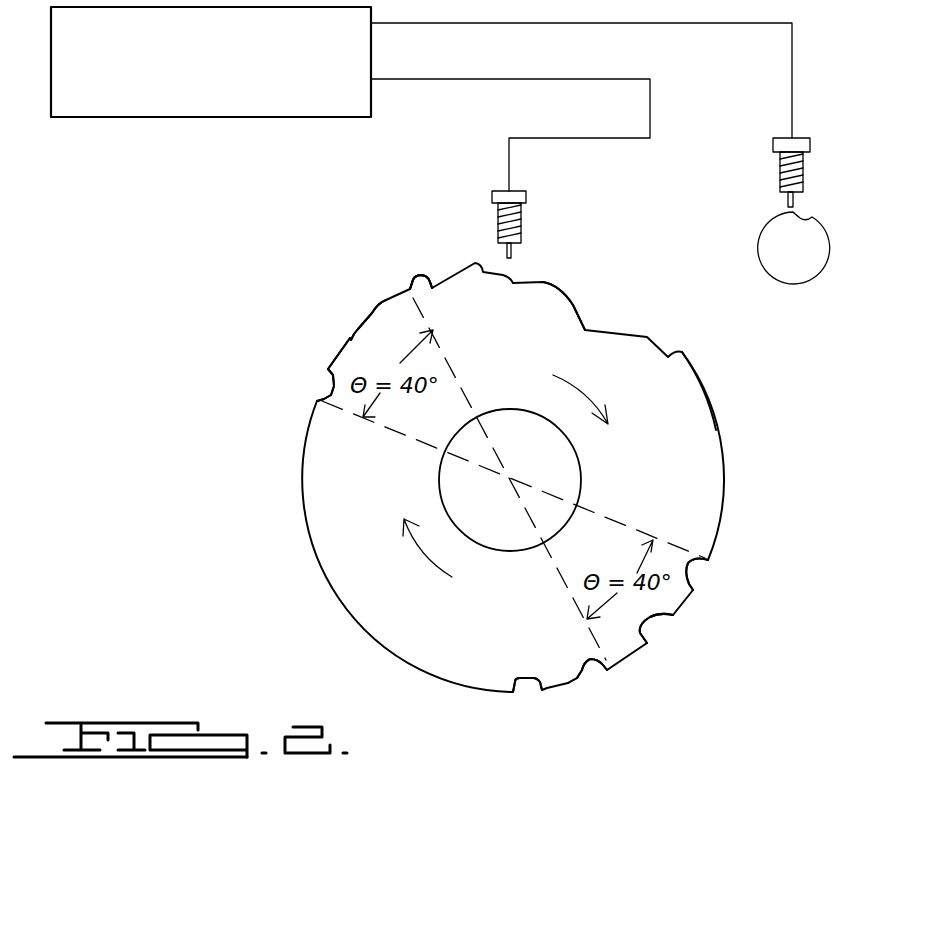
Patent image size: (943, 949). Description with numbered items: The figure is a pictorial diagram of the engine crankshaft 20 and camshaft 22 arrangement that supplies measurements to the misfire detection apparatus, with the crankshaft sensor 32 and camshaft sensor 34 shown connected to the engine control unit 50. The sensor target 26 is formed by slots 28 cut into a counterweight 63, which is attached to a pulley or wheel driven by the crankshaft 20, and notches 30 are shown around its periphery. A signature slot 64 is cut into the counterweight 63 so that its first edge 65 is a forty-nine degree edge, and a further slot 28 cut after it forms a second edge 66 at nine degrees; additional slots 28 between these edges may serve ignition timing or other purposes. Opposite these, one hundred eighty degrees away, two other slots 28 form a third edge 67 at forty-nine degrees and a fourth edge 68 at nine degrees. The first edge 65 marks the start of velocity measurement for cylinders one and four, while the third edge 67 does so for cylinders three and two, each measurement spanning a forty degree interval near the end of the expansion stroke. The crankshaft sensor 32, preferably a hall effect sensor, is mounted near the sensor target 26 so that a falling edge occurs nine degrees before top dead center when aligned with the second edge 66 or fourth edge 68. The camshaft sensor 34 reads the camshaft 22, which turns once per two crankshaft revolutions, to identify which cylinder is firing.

The engine control unit 50 is at (197, 100).
The crankshaft sensor 32 is at (513, 220).
The camshaft sensor 34 is at (798, 165).
The camshaft 22 is at (807, 273).
The sensor target 26 is at (327, 532).
The crankshaft 20 is at (502, 540).
The slots 28 is at (325, 390).
The notches 30 is at (380, 300).
The counterweight 63 is at (710, 402).
The signature slot 64 is at (573, 305).
The first edge 65 is at (417, 282).
The second edge 66 is at (323, 398).
The third edge 67 is at (603, 670).
The fourth edge 68 is at (707, 563).